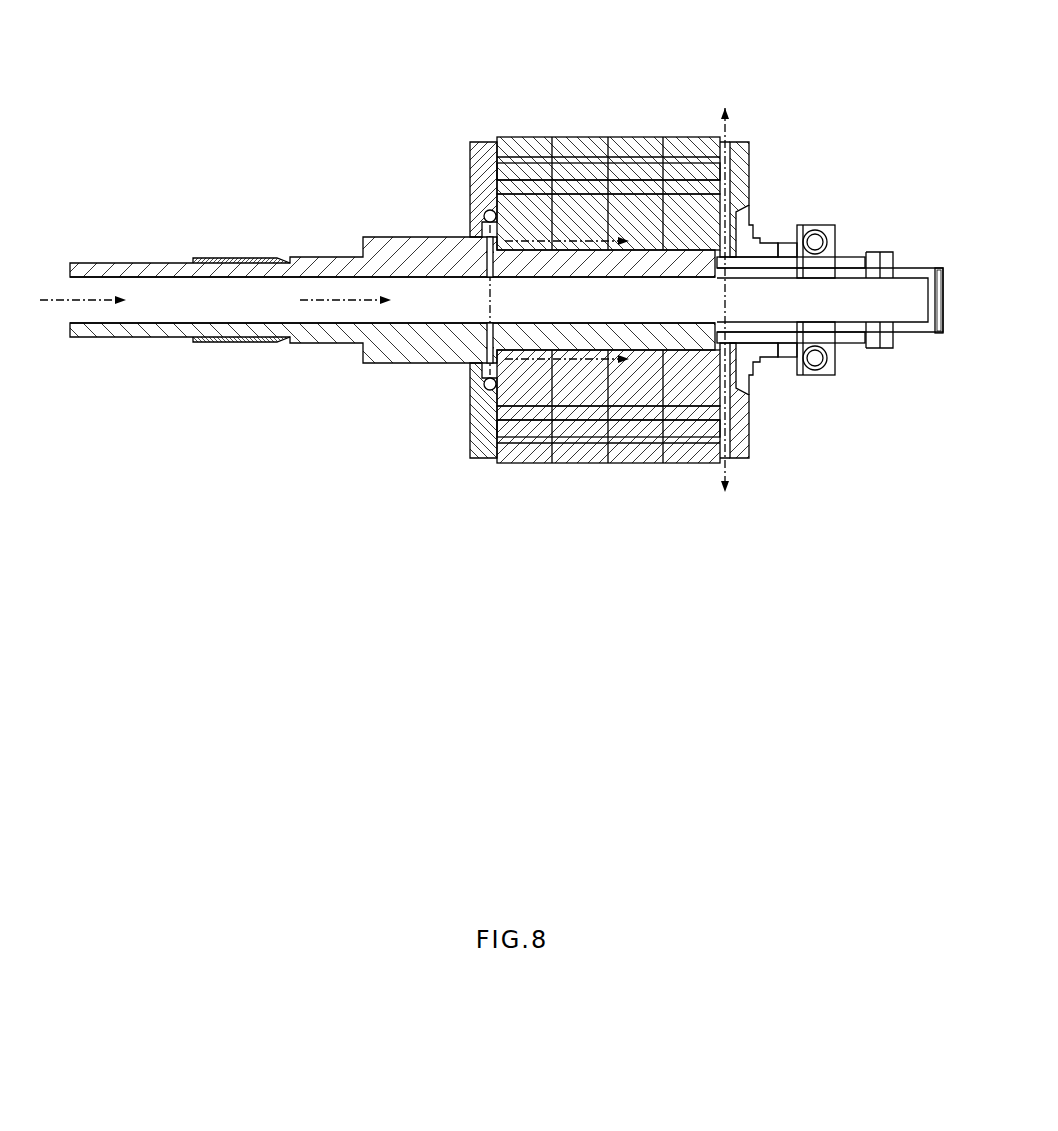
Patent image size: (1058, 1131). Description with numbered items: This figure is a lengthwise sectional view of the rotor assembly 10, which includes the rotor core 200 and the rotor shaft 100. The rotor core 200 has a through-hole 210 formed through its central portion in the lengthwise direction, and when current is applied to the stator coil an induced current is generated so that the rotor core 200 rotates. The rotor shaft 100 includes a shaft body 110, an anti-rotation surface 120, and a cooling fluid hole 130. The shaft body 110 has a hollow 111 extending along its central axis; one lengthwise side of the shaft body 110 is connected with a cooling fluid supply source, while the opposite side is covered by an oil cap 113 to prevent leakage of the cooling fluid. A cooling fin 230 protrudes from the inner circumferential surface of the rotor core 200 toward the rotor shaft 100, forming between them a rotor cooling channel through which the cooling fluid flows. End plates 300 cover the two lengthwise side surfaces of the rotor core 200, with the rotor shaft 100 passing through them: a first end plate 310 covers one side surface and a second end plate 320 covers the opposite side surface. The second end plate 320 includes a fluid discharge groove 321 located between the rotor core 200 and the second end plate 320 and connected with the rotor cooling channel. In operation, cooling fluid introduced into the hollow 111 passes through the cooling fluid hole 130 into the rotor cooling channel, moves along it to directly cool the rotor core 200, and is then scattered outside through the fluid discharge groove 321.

The rotor assembly 10 is at (257, 28).
The rotor shaft 100 is at (424, 139).
The shaft body 110 is at (483, 207).
The hollow 111 is at (325, 268).
The oil cap 113 is at (943, 273).
The anti-rotation surface 120 is at (633, 250).
The cooling fluid hole 130 is at (490, 243).
The rotor core 200 is at (578, 200).
The through-hole 210 is at (667, 258).
The cooling fin 230 is at (533, 257).
The end plates 300 is at (497, 85).
The first end plate 310 is at (487, 140).
The second end plate 320 is at (742, 145).
The fluid discharge groove 321 is at (737, 186).